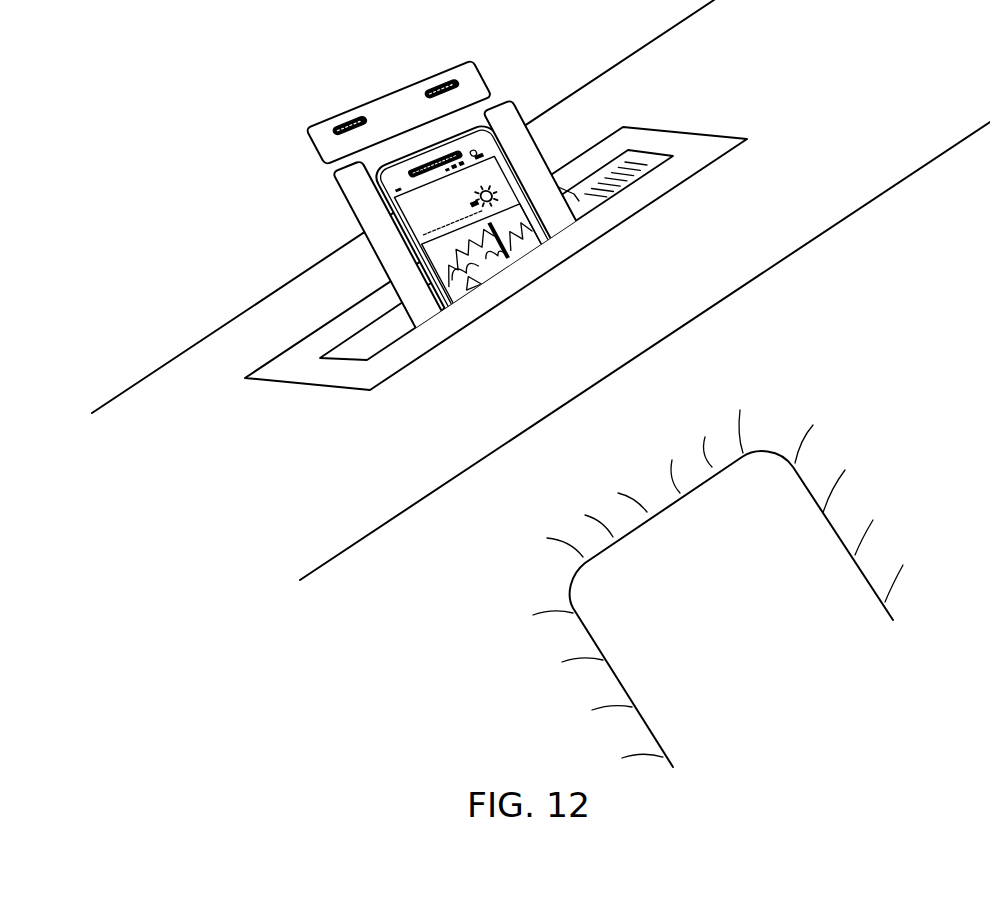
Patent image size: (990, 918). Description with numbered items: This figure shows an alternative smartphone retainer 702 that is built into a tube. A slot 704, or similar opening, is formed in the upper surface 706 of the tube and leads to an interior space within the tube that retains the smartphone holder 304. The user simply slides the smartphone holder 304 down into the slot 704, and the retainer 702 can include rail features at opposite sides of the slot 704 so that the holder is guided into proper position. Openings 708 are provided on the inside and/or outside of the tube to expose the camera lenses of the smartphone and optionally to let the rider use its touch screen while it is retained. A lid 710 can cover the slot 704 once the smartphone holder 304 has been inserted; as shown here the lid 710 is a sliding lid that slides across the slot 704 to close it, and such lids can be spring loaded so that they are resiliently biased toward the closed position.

The smartphone holder 304 is at (391, 113).
The smartphone retainer 702 is at (280, 314).
The slot 704 is at (366, 360).
The upper surface 706 is at (322, 456).
The openings 708 is at (803, 527).
The lid 710 is at (622, 172).